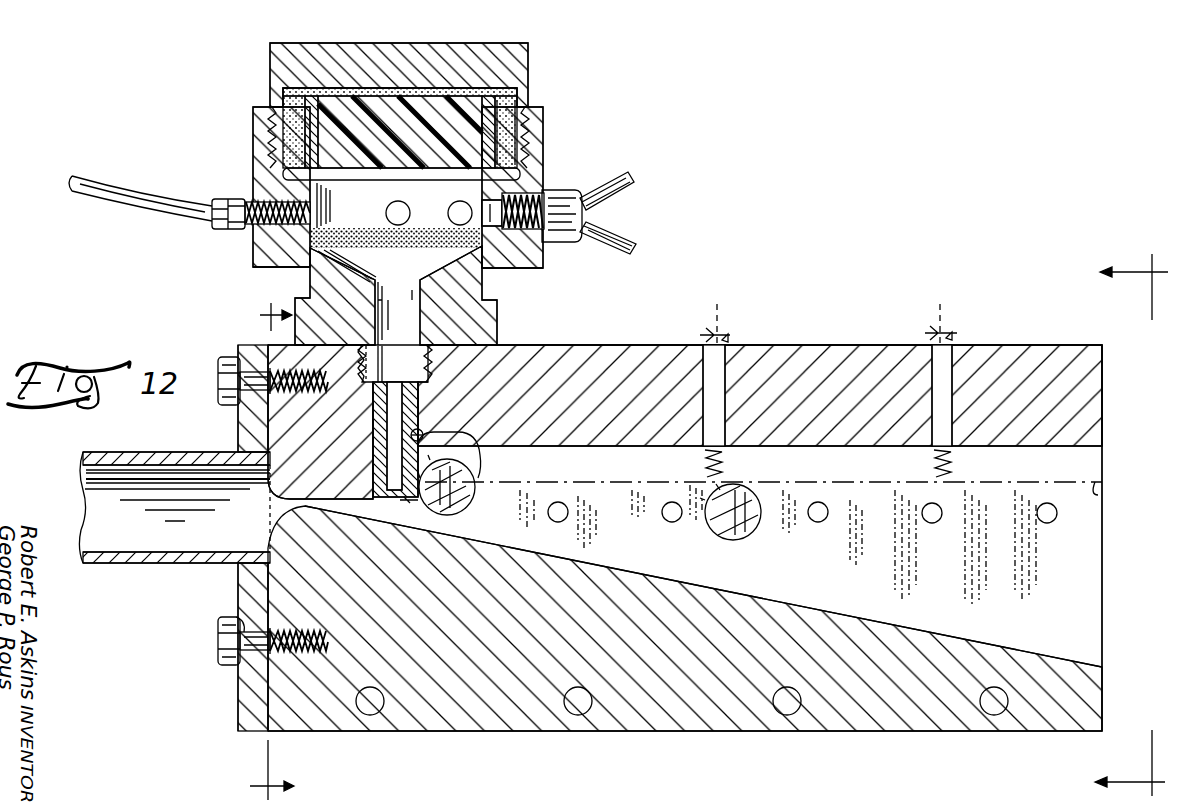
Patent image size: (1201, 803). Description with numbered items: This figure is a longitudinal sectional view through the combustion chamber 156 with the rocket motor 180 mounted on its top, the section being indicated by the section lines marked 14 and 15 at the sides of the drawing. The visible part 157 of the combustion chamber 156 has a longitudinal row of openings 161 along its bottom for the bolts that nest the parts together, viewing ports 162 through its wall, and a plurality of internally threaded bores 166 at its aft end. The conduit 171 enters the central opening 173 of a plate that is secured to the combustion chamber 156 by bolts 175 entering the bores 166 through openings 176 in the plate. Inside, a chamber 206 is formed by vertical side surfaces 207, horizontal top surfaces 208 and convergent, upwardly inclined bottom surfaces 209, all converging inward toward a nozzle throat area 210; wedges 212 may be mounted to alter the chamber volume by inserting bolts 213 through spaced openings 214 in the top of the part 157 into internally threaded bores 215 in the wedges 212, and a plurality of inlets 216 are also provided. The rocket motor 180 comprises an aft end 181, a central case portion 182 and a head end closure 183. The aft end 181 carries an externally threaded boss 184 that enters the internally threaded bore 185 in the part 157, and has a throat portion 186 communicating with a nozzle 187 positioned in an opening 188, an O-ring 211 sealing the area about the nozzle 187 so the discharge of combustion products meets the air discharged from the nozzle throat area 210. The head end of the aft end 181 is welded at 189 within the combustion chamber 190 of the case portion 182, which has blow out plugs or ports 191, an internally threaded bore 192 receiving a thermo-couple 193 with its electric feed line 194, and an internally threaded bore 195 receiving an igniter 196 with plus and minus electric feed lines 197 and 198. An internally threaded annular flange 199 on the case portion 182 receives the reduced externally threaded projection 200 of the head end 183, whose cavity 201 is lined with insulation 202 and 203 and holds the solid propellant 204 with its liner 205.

The section line 14- 14 is at (254, 552).
The section line 15- 15 is at (1148, 525).
The combustion chamber 156 is at (824, 340).
The part 157 is at (612, 345).
The openings 161 is at (575, 716).
The viewing ports 162 is at (484, 528).
The internally threaded bores 166 is at (300, 392).
The conduit 171 is at (165, 560).
The central opening 173 is at (238, 712).
The bolts 175 is at (218, 362).
The openings 176 is at (238, 618).
The rocket motor 180 is at (560, 112).
The aft end 181 is at (497, 330).
The central case portion 182 is at (543, 160).
The head end closure 183 is at (528, 62).
The externally threaded boss 184 is at (430, 358).
The internally threaded bore 185 is at (556, 345).
The throat portion 186 is at (369, 297).
The nozzle 187 is at (404, 500).
The opening 188 is at (373, 456).
The weld 189 is at (328, 230).
The combustion chamber 190 is at (363, 204).
The blow out plugs or ports 191 is at (455, 204).
The internally threaded bore 192 is at (262, 200).
The thermo-couple 193 is at (228, 229).
The electric feed line 194 is at (112, 192).
The internally threaded bore 195 is at (535, 190).
The igniter 196 is at (576, 214).
The electric feed line 197 is at (630, 175).
The electric feed line 198 is at (632, 248).
The internally threaded annular flange 199 is at (256, 134).
The reduced externally threaded projection 200 is at (518, 144).
The cavity 201 is at (520, 110).
The insulation 202 is at (432, 96).
The insulation 203 is at (290, 104).
The solid propellant 204 is at (366, 100).
The liner 205 is at (312, 90).
The chamber 206 is at (785, 565).
The vertical side surfaces 207 is at (1102, 578).
The horizontal top surfaces 208 is at (1068, 432).
The convergent or upwardly inclined bottom surfaces 209 is at (905, 626).
The nozzle throat area 210 is at (268, 520).
The O-ring 211 is at (466, 455).
The wedges 212 is at (1098, 465).
The bolts 213 is at (700, 308).
The spaced openings 214 is at (725, 352).
The internally threaded bores 215 is at (892, 795).
The inlets 216 is at (672, 522).